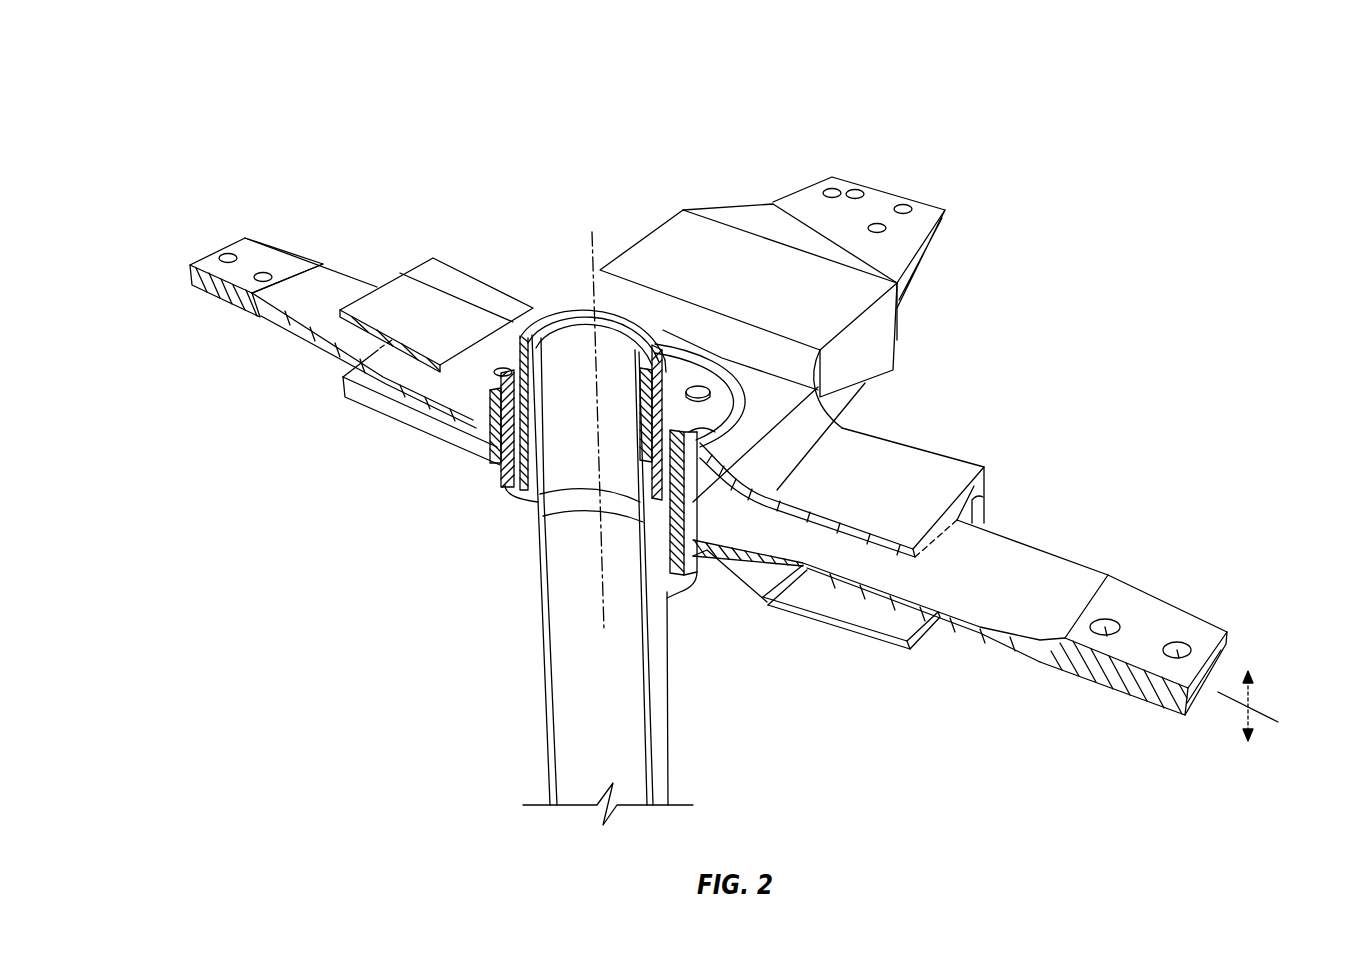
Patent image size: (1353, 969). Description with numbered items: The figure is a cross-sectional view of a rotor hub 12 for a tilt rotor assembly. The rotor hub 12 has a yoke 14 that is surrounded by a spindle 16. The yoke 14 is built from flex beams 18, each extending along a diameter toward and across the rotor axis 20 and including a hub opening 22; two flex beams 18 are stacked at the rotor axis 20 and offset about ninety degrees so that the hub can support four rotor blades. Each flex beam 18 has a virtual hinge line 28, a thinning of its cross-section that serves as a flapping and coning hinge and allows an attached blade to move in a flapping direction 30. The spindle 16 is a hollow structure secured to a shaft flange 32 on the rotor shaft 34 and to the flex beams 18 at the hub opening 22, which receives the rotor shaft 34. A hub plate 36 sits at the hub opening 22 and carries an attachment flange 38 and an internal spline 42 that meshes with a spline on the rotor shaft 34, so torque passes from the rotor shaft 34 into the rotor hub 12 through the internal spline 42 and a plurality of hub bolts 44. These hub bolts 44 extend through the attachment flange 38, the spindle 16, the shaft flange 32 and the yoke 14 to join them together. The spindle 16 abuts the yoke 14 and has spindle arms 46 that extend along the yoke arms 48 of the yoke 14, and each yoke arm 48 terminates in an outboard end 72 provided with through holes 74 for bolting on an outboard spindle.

The rotor hub 12 is at (417, 103).
The yoke 14 is at (475, 440).
The spindle 16 is at (516, 304).
The flex beam 18 is at (351, 293).
The rotor axis 20 is at (598, 553).
The hub opening 22 is at (500, 467).
The virtual hinge line 28 is at (372, 354).
The flapping direction 30 is at (1252, 700).
The shaft flange 32 is at (530, 498).
The rotor shaft 34 is at (560, 660).
The hub plate 36 is at (485, 430).
The attachment flange 38 is at (710, 432).
The internal spline 42 is at (538, 351).
The hub bolt 44 is at (487, 358).
The spindle arm 46 is at (438, 282).
The yoke arm 48 is at (317, 266).
The outboard end 72 is at (190, 272).
The through hole 74 is at (223, 256).